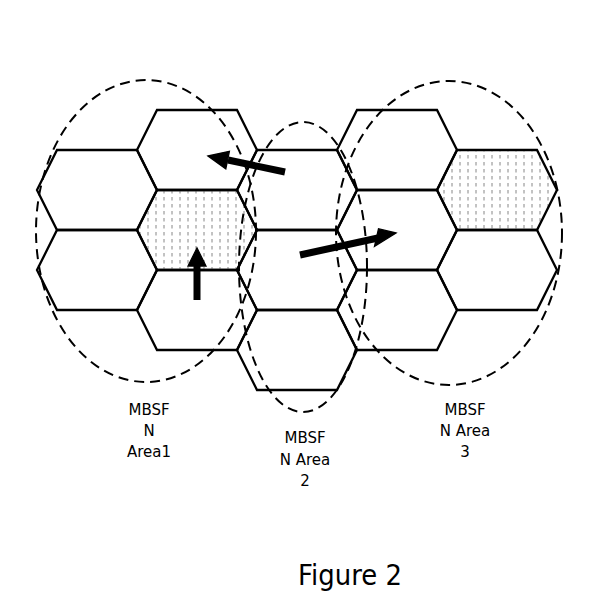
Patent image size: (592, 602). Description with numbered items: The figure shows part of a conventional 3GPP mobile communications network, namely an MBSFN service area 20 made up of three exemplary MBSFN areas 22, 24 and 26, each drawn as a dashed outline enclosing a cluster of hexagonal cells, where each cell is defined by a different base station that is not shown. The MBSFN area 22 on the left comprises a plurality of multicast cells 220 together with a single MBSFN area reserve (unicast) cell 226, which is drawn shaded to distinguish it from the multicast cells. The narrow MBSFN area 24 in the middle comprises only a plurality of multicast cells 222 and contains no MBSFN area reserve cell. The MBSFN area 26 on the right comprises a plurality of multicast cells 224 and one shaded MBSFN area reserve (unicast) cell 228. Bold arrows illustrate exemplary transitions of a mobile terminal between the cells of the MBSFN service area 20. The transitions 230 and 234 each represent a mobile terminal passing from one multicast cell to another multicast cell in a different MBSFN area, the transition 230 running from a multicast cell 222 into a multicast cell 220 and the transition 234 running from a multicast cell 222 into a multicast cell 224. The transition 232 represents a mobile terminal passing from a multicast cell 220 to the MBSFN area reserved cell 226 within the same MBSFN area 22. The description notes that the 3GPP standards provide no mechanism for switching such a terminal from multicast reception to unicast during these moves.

The MBSFN service area 20 is at (85, 36).
The MBSFN area 22 is at (85, 113).
The MBSFN area 24 is at (300, 128).
The MBSFN area 26 is at (516, 118).
The multicast cells 220 is at (85, 191).
The multicast cells 222 is at (282, 213).
The multicast cells 224 is at (382, 153).
The MBSFN area reserve (unicast) cell 226 is at (183, 226).
The MBSFN area reserve (unicast) cell 228 is at (488, 207).
The transition 230 is at (225, 152).
The transition 232 is at (192, 280).
The transition 234 is at (378, 234).